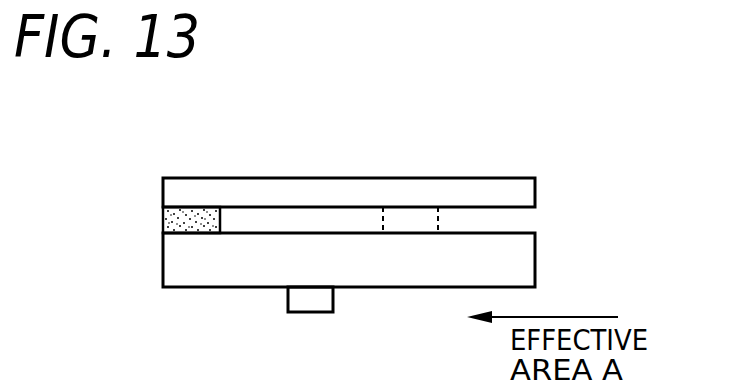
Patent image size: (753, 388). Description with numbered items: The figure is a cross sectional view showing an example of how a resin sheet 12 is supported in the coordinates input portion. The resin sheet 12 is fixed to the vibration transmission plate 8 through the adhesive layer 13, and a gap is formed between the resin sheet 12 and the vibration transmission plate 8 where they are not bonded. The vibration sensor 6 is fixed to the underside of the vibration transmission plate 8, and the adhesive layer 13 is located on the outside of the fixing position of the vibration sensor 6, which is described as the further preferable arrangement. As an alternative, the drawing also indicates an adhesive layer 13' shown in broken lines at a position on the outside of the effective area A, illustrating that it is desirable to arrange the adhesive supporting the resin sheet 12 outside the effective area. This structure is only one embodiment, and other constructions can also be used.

The resin sheet 12 is at (253, 185).
The adhesive layer 13 is at (149, 204).
The adhesive layer 13' is at (420, 181).
The vibration transmission plate 8 is at (192, 276).
The vibration sensor 6 is at (318, 300).